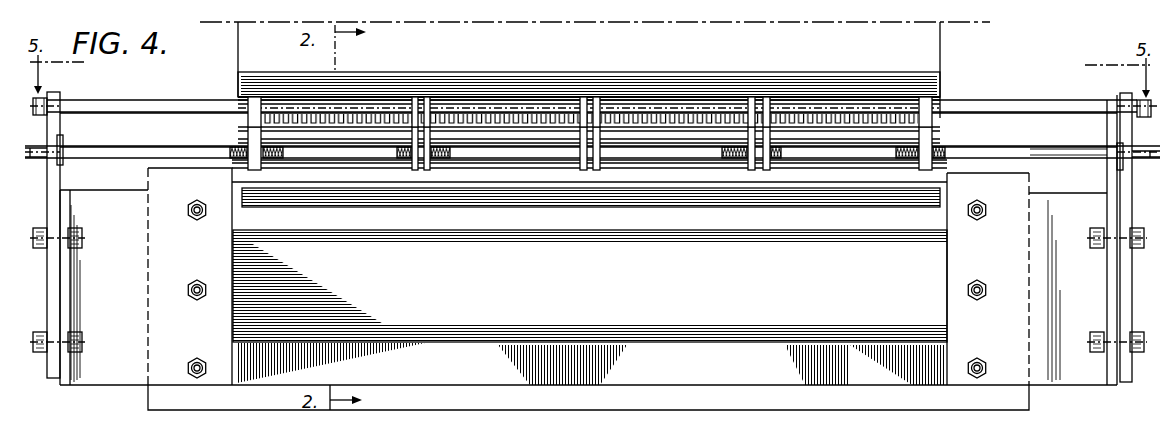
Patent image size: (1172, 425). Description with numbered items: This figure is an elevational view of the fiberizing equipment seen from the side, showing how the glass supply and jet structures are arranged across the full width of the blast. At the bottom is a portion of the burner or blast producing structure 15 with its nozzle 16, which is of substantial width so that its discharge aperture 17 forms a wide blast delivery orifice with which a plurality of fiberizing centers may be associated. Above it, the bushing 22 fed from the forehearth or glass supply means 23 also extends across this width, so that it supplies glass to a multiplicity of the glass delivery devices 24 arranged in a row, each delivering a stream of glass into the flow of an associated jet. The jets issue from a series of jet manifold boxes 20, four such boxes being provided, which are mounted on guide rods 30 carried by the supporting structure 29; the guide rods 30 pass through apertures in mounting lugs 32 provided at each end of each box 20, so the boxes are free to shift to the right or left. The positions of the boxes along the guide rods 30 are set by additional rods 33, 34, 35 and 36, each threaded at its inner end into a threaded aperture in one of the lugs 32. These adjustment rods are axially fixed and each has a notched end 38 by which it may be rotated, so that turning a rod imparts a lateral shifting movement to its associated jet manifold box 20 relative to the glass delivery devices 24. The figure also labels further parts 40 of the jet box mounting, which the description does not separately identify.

The burner or blast producing structure 15 is at (600, 407).
The nozzle 16 is at (498, 305).
The discharge aperture 17 is at (646, 204).
The jet manifold box 20 is at (342, 145).
The bushing 22 is at (197, 112).
The forehearth or glass supply means 23 is at (610, 53).
The glass orifice means (glass delivery device) 24 is at (365, 125).
The supporting structure 29 is at (48, 262).
The guide rod 30 is at (113, 105).
The mounting lug 32 is at (256, 172).
The adjustment rod 33 is at (122, 155).
The adjustment rod 34 is at (1080, 159).
The adjustment rod 35 is at (452, 153).
The adjustment rod 36 is at (721, 153).
The notched end 38 is at (46, 160).
The clamp block 40 is at (258, 139).